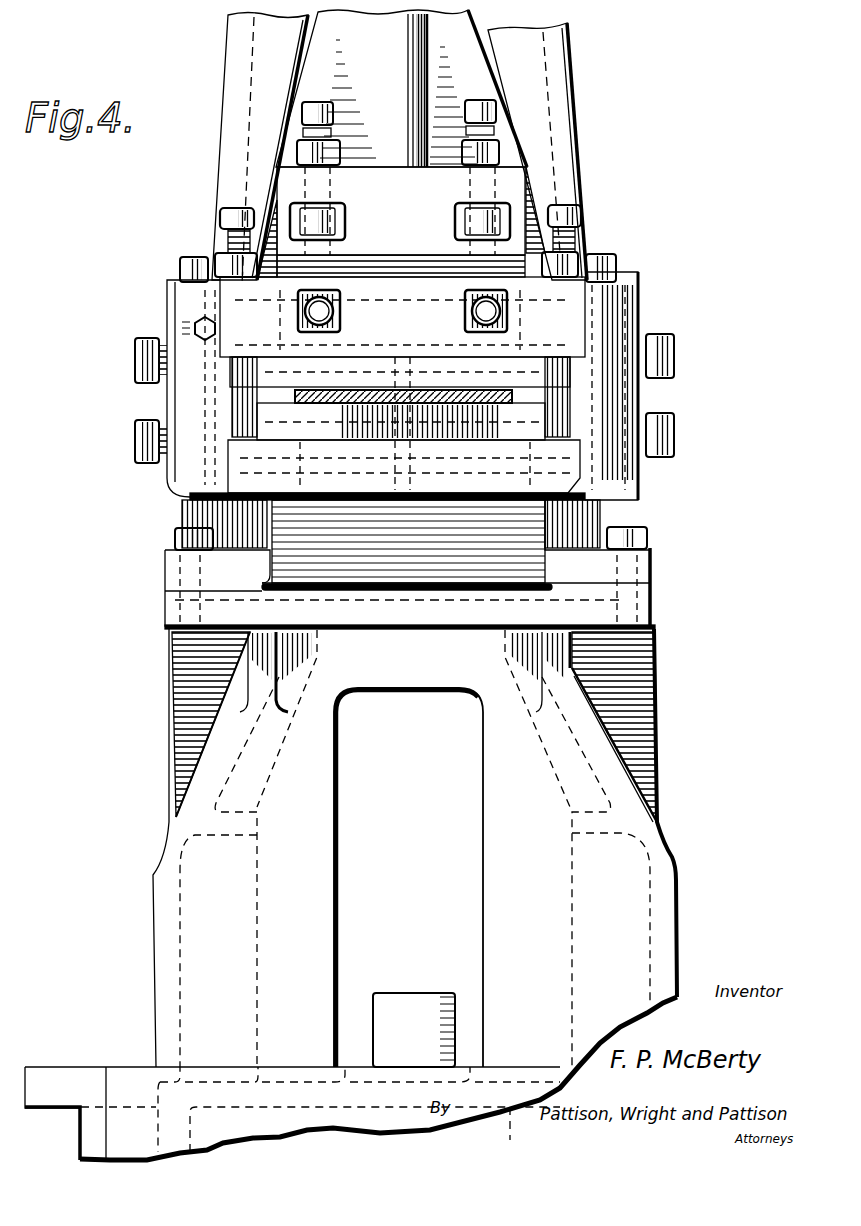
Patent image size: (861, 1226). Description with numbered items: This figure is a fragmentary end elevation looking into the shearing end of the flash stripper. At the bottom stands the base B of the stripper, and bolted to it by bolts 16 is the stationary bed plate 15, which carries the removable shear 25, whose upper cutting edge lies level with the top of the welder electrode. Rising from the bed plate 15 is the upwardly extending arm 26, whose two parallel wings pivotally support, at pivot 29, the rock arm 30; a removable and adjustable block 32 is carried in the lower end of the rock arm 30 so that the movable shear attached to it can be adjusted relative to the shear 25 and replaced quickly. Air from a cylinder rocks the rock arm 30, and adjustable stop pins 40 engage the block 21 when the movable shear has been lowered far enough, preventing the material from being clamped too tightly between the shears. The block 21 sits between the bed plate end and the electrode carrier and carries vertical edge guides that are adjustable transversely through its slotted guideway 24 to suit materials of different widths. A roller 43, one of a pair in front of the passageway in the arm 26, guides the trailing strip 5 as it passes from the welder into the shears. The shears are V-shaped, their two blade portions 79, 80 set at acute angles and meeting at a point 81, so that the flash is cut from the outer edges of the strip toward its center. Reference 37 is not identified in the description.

The rock arm 30 is at (401, 88).
The upwardly extending arm 26 is at (563, 72).
The adjustable stop pins 40 is at (230, 218).
The removable and adjustable block 32 is at (385, 292).
The pivot 29 is at (640, 285).
The roller 43 is at (645, 305).
The point 81 is at (395, 372).
The trailing material or strip 5 is at (440, 390).
The blade portion 80 is at (290, 362).
The bearing band 37 is at (400, 397).
The blade portion 79 is at (565, 370).
The removable shear 25 is at (362, 408).
The block 21 is at (250, 483).
The slotted guideway 24 is at (472, 447).
The bolts 16 is at (178, 540).
The stationary bed plate 15 is at (410, 564).
The base of flash stripper B is at (185, 707).